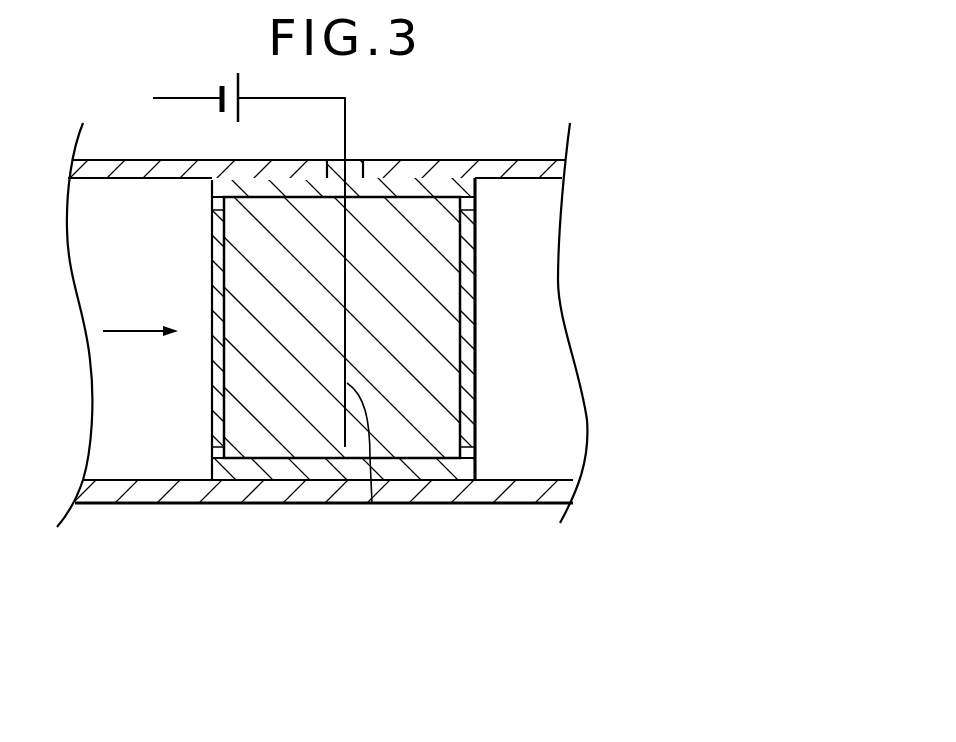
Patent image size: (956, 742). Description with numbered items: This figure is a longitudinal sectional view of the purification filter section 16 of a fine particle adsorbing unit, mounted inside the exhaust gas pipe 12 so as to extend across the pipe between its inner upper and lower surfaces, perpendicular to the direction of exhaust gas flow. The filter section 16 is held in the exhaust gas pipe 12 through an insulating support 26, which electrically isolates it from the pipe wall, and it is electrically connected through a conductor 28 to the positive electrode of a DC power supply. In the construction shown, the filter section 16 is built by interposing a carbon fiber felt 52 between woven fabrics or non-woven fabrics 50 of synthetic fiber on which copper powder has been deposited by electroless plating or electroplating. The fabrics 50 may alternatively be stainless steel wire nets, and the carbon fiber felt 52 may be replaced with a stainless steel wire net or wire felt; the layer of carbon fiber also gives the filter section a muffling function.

The exhaust gas pipe 12 is at (140, 490).
The purification filter section 16 is at (478, 371).
The insulating support 26 is at (277, 465).
The conductor 28 is at (372, 503).
The woven fabric or non-woven fabric 50 is at (222, 292).
The carbon fiber felt 52 is at (443, 278).